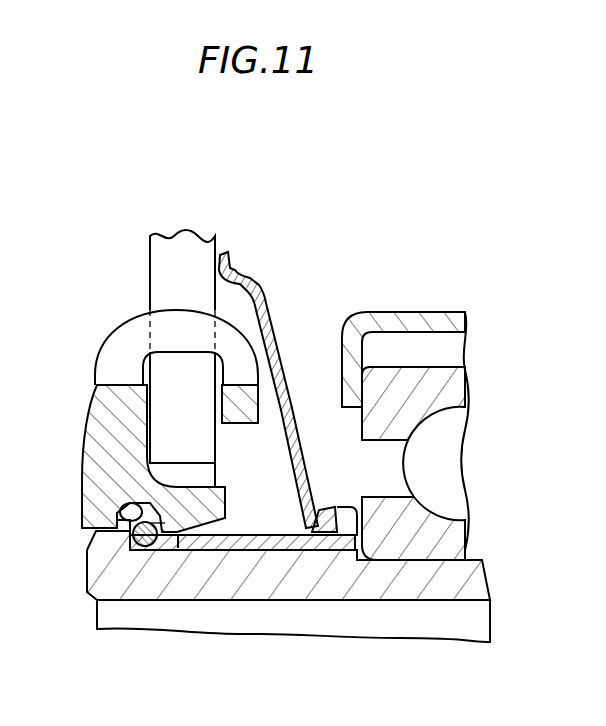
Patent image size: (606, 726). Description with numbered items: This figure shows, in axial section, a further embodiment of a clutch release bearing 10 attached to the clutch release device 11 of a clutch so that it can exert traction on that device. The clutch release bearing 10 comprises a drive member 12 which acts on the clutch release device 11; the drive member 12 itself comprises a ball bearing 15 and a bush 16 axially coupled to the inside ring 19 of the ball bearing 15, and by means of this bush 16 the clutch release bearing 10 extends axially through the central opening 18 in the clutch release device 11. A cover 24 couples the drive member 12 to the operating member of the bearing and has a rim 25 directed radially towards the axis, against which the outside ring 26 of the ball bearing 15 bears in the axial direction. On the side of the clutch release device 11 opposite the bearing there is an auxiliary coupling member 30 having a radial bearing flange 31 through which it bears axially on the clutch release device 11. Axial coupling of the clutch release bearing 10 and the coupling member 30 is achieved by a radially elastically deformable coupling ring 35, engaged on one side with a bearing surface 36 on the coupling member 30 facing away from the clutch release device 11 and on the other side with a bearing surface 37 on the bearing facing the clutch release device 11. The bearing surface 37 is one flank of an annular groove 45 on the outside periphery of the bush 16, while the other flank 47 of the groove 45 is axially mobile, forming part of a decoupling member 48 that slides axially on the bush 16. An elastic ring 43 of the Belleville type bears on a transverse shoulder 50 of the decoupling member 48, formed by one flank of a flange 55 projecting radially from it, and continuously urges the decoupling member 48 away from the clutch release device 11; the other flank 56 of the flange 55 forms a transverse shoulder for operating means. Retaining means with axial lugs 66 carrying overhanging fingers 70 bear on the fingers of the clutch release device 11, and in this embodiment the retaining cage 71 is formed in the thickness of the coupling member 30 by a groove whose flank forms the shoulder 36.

The clutch release bearing 10 is at (358, 300).
The clutch release device 11 is at (149, 256).
The drive member 12 is at (247, 620).
The ball bearing 15 is at (472, 352).
The bush 16 is at (373, 601).
The central opening 18 is at (180, 465).
The inside ring 19 is at (462, 544).
The cover 24 is at (455, 310).
The rim 25 is at (348, 378).
The outside ring 26 is at (465, 384).
The coupling member 30 is at (82, 446).
The radial bearing flange 31 is at (113, 405).
The coupling ring 35 is at (158, 525).
The bearing surface 36 is at (130, 503).
The bearing surface 37 is at (125, 532).
The elastic ring 43 is at (279, 344).
The annular groove 45 is at (152, 545).
The other flank 47 is at (178, 542).
The decoupling member 48 is at (298, 555).
The transverse shoulder 50 is at (320, 518).
The flange 55 is at (333, 508).
The other flank 56 is at (345, 550).
The axial lugs 66 is at (168, 308).
The circumferentially overhanging finger 70 is at (243, 424).
The retaining cage 71 is at (90, 494).